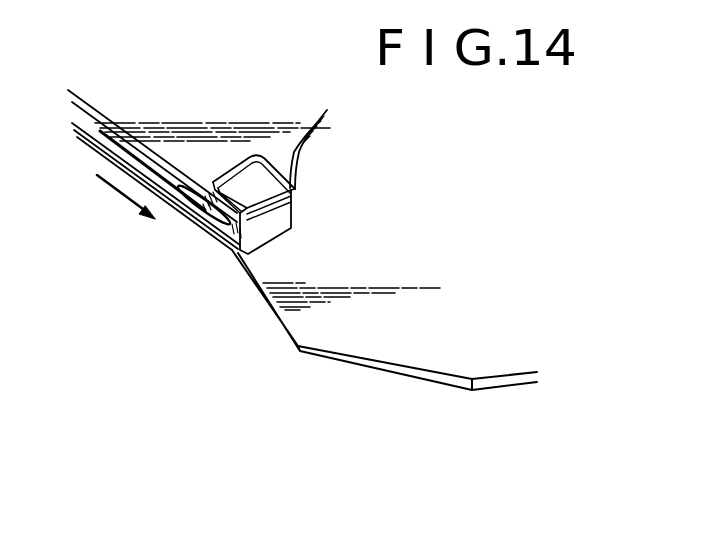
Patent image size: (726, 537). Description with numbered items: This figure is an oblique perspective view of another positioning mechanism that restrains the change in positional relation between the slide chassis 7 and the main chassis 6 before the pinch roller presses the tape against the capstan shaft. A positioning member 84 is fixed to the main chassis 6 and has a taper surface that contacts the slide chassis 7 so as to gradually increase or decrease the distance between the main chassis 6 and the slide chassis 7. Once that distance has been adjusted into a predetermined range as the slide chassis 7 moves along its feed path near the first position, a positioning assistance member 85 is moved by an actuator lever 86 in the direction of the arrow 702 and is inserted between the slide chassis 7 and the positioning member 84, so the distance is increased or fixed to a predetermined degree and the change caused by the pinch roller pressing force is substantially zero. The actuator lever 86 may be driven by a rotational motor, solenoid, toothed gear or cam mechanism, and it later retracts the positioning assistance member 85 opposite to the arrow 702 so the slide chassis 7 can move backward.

The main chassis 6 is at (315, 325).
The slide chassis 7 is at (270, 157).
The positioning member 84 is at (267, 228).
The positioning assistance member 85 is at (183, 212).
The actuator lever 86 is at (128, 158).
The arrow 702 is at (113, 193).